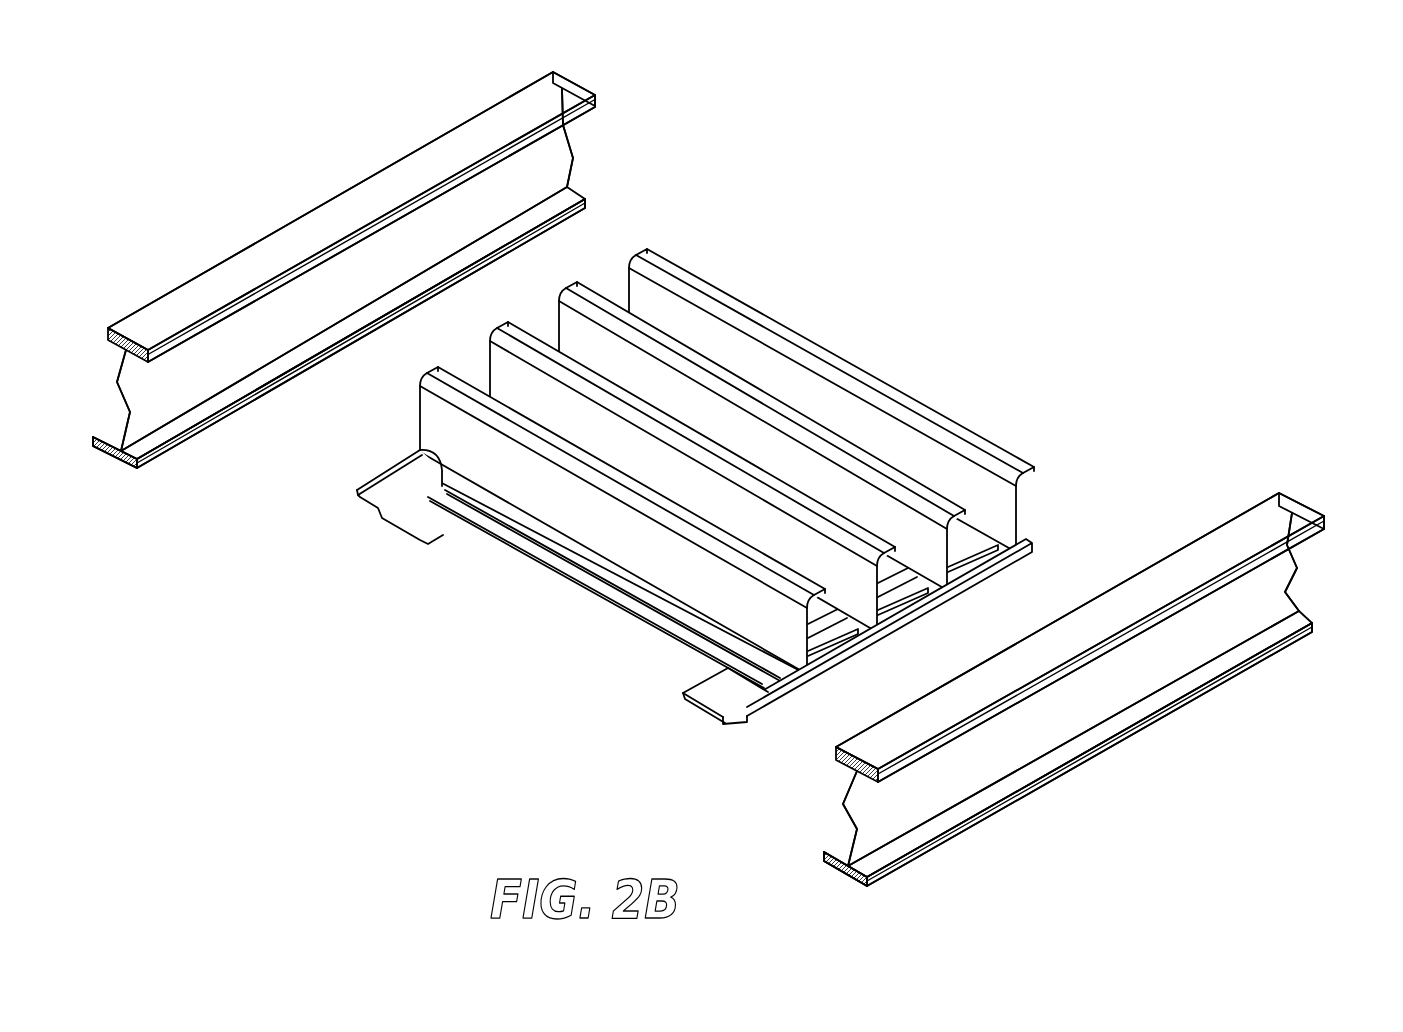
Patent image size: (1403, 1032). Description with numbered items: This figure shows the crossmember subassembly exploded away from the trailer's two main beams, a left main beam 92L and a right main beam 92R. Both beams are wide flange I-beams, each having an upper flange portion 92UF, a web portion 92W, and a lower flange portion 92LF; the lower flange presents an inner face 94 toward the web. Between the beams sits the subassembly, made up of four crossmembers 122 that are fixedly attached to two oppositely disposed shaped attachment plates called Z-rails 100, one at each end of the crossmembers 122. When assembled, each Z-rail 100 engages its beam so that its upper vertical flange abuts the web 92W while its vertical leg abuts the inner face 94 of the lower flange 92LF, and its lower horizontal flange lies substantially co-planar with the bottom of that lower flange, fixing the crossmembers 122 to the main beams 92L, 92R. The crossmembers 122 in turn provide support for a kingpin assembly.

The left main beam 92L is at (578, 75).
The right main beam 92R is at (1305, 495).
The upper flange portion 92UF is at (148, 317).
The web portion 92W is at (130, 388).
The lower flange portion 92LF is at (137, 450).
The inner face 94 is at (180, 438).
The crossmembers 122 is at (692, 290).
The Z-rails 100 is at (397, 541).